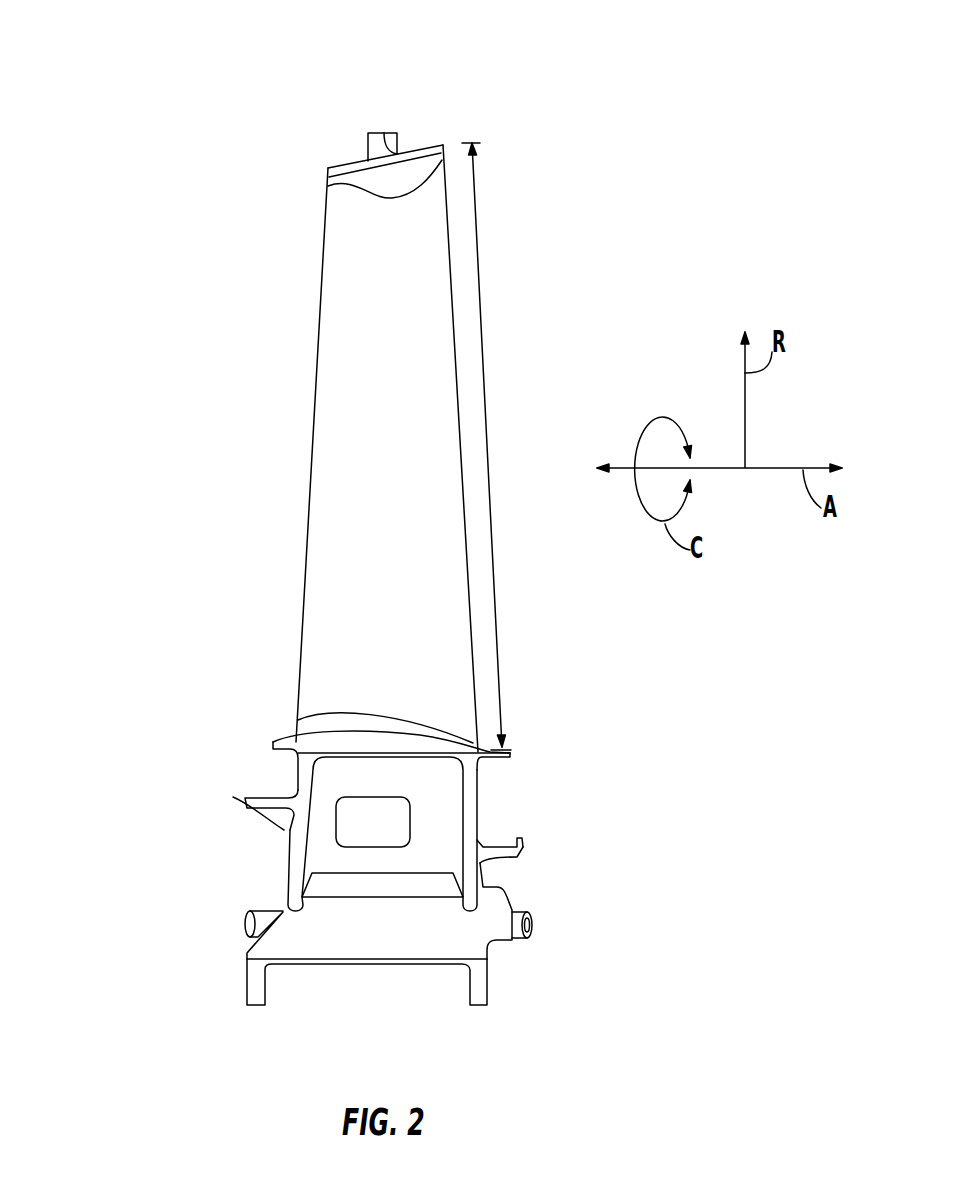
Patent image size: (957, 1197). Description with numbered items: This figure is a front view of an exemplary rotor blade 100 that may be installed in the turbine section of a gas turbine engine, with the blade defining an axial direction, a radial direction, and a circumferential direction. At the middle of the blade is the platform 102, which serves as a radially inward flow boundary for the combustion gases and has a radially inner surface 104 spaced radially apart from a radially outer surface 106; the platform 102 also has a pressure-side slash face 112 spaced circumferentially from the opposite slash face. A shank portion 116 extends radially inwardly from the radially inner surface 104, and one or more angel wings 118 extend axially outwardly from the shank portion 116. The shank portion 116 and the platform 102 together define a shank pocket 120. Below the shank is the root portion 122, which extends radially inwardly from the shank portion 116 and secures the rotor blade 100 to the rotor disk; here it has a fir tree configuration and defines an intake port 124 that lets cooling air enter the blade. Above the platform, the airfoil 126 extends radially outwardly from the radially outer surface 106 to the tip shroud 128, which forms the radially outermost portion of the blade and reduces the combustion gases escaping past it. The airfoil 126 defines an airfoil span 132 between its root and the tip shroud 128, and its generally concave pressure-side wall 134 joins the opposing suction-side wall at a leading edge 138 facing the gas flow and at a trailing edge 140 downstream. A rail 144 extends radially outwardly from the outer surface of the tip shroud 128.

The rotor blade 100 is at (153, 138).
The platform 102 is at (268, 745).
The radially inner surface 104 is at (512, 753).
The radially outer surface 106 is at (282, 740).
The pressure-side slash face 112 is at (347, 742).
The shank portion 116 is at (480, 789).
The angel wings 118 is at (245, 798).
The shank pocket 120 is at (367, 821).
The root portion 122 is at (247, 962).
The intake port 124 is at (363, 977).
The airfoil 126 is at (305, 358).
The tip shroud 128 is at (432, 145).
The airfoil span 132 is at (482, 335).
The pressure-side wall 134 is at (402, 490).
The leading edge 138 is at (310, 513).
The trailing edge 140 is at (450, 250).
The rail 144 is at (382, 133).